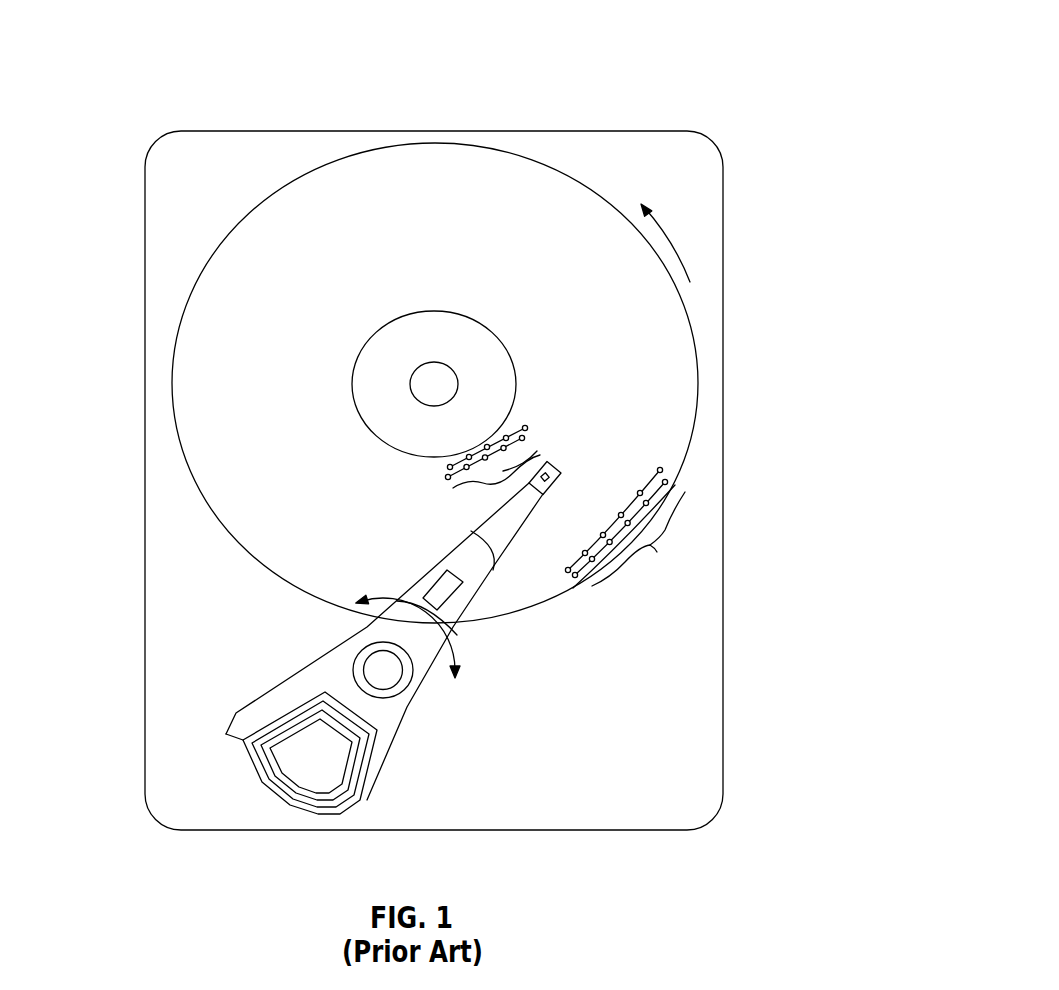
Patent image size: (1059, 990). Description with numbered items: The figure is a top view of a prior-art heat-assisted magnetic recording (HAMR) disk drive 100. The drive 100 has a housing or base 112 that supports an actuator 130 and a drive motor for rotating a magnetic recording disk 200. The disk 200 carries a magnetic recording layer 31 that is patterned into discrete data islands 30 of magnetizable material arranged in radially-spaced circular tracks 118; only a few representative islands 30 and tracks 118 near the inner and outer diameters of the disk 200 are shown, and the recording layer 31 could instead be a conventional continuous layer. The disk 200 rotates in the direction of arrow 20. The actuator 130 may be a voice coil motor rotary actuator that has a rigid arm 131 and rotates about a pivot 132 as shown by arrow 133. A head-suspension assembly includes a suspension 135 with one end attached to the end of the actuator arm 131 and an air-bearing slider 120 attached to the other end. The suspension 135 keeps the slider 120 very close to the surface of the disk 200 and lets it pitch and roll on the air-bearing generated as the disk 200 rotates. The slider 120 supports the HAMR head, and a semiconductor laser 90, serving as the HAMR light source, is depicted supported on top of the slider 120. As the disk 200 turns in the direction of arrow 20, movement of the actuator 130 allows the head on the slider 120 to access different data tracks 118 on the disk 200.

The HAMR disk drive 100 is at (143, 53).
The housing or base 112 is at (650, 131).
The disk 200 is at (296, 180).
The arrow 20 is at (668, 228).
The magnetic recording layer 31 is at (678, 353).
The circular tracks 118 is at (444, 461).
The data islands 30 is at (569, 511).
The semiconductor laser 90 is at (558, 472).
The air-bearing slider 120 is at (552, 489).
The actuator 130 is at (232, 718).
The suspension 135 is at (477, 540).
The rigid arm 131 is at (420, 585).
The pivot 132 is at (367, 668).
The arrow 133 is at (460, 652).